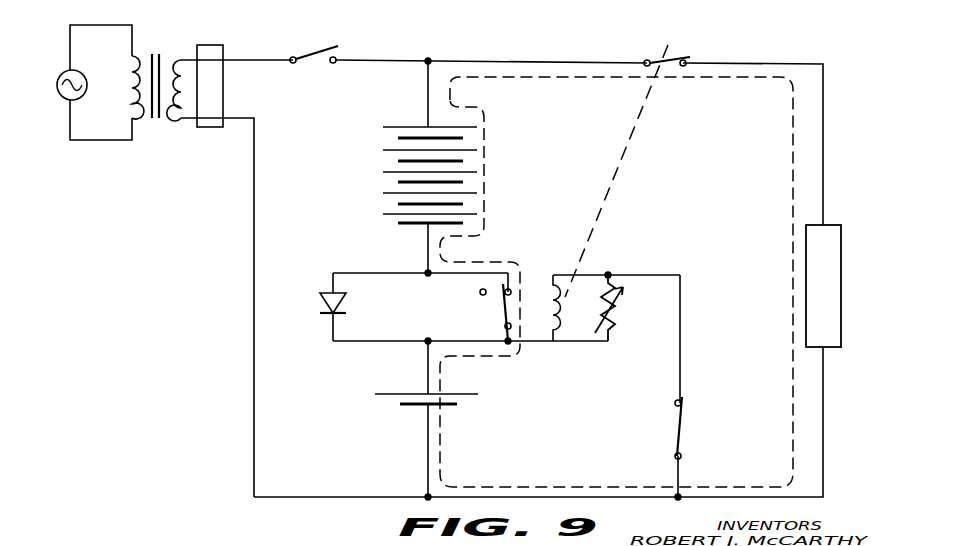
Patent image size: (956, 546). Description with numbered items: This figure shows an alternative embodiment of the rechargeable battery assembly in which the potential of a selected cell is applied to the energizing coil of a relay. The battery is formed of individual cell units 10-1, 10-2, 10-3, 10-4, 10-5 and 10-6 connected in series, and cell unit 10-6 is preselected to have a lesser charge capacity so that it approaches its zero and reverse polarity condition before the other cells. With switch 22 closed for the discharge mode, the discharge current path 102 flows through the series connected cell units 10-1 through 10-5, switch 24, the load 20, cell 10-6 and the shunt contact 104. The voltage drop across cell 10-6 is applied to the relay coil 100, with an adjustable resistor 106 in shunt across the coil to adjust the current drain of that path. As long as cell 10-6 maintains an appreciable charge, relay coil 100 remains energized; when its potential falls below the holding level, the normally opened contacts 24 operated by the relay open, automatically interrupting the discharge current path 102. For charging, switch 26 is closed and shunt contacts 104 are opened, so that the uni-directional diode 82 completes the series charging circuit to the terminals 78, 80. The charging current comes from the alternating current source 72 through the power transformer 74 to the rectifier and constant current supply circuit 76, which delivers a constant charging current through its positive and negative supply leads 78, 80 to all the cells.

The alternating current source 72 is at (95, 68).
The power transformer 74 is at (157, 52).
The rectifier and constant current supply circuit 76 is at (208, 130).
The positive supply lead 78 is at (256, 58).
The negative supply lead 80 is at (243, 120).
The switch 26 is at (310, 47).
The switch 24 is at (664, 50).
The discharge current path 102 is at (751, 82).
The cell unit 10-1 is at (393, 139).
The cell unit 10-2 is at (393, 162).
The cell unit 10-3 is at (393, 184).
The cell unit 10-4 is at (393, 205).
The cell unit 10-5 is at (393, 225).
The cell unit 10-6 is at (473, 407).
The diode 82 is at (349, 306).
The shunt contact 104 is at (503, 306).
The relay coil 100 is at (548, 298).
The adjustable resistor 106 is at (625, 318).
The switch 22 is at (684, 434).
The load 20 is at (843, 237).